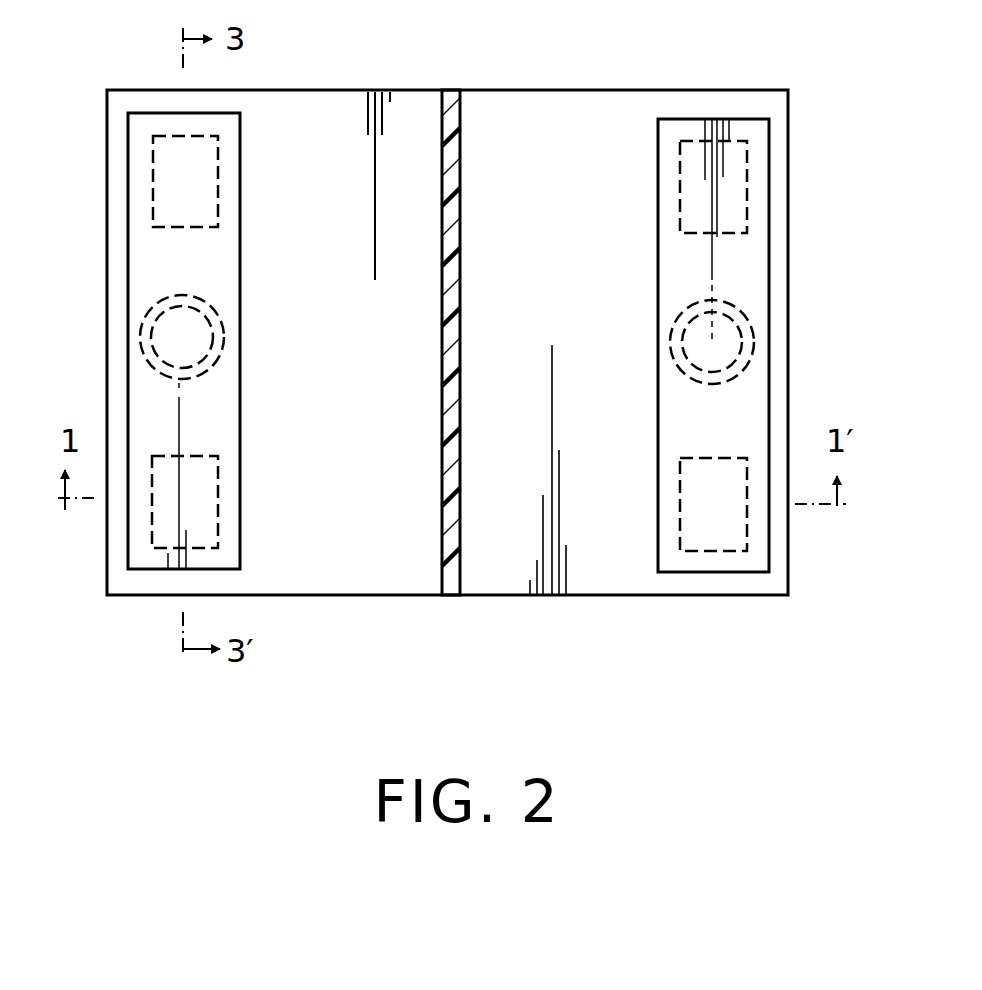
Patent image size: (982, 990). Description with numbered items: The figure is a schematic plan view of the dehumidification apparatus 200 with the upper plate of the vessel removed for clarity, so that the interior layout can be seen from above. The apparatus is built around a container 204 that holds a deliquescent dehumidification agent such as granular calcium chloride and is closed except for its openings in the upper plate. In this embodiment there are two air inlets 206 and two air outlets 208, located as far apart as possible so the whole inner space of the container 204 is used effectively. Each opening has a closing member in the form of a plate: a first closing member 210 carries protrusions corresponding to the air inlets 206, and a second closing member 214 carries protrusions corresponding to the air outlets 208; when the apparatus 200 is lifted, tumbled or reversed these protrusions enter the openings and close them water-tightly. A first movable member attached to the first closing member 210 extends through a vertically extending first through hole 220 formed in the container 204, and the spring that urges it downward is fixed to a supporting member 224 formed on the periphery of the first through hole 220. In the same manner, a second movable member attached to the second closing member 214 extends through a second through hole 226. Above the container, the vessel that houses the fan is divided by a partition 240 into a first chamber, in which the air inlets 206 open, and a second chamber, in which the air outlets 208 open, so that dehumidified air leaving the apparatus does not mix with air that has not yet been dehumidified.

The dehumidification apparatus 200 is at (459, 342).
The container 204 is at (790, 322).
The air inlet 206 is at (152, 190).
The air outlet 208 is at (740, 178).
The first closing member 210 is at (148, 265).
The second closing member 214 is at (748, 253).
The first through hole 220 is at (158, 349).
The supporting member 224 is at (222, 330).
The second through hole 226 is at (687, 345).
The partition 240 is at (453, 310).